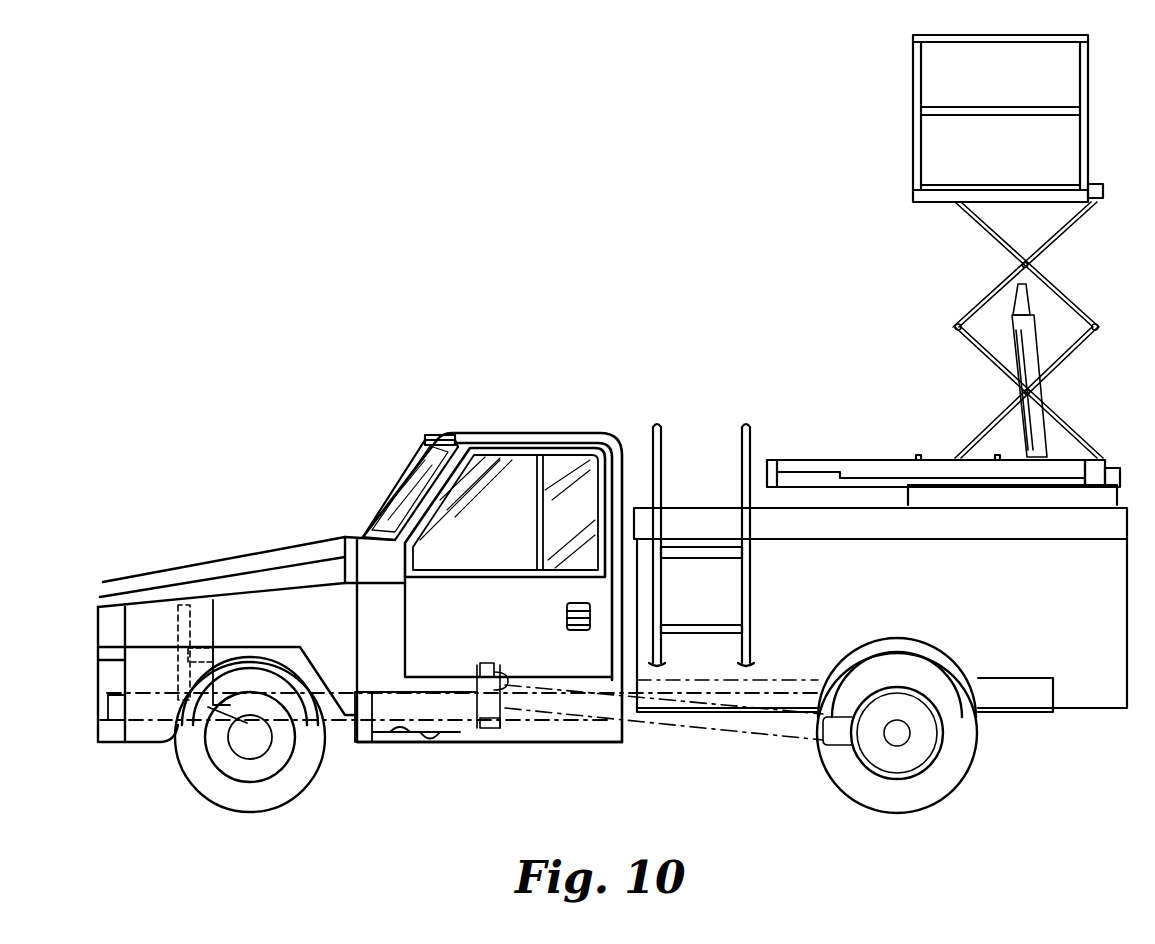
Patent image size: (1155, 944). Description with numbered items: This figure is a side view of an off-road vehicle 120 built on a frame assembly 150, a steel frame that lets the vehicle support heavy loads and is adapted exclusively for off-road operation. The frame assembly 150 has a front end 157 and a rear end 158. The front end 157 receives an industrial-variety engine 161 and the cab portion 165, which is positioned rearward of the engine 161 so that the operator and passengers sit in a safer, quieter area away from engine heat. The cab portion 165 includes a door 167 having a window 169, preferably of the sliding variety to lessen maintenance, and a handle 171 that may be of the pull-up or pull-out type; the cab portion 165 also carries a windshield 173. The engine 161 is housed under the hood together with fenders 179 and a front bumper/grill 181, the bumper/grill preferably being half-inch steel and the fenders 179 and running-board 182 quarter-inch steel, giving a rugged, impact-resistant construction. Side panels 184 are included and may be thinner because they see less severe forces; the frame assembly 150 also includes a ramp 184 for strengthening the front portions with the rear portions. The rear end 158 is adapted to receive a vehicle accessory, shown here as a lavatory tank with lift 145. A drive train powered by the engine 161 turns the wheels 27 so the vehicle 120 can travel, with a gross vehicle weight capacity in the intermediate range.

The off-road vehicle 120 is at (383, 442).
The cab portion 165 is at (502, 422).
The windshield 173 is at (380, 503).
The window 169 is at (497, 517).
The door 167 is at (463, 624).
The handle 171 is at (567, 612).
The side panels 184 is at (152, 637).
The engine 161 is at (285, 637).
The fenders 179 is at (165, 689).
The front bumper/grill 181 is at (93, 718).
The front end 157 is at (175, 723).
The wheels 27 is at (313, 767).
The frame assembly 150 is at (420, 708).
The running-board 182 is at (572, 733).
The rear end 158 is at (745, 743).
The lavatory tank with lift 145 is at (962, 604).